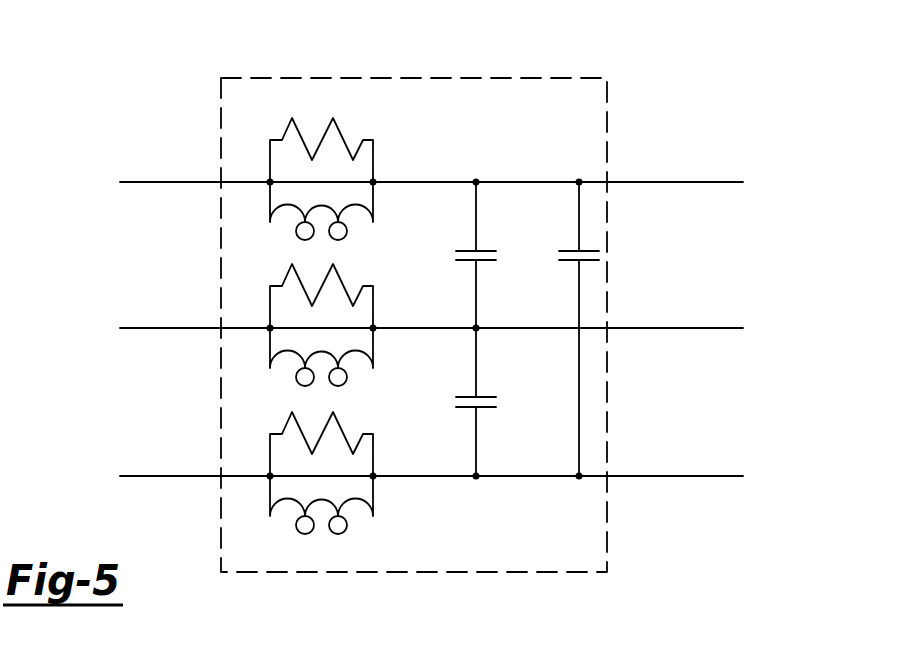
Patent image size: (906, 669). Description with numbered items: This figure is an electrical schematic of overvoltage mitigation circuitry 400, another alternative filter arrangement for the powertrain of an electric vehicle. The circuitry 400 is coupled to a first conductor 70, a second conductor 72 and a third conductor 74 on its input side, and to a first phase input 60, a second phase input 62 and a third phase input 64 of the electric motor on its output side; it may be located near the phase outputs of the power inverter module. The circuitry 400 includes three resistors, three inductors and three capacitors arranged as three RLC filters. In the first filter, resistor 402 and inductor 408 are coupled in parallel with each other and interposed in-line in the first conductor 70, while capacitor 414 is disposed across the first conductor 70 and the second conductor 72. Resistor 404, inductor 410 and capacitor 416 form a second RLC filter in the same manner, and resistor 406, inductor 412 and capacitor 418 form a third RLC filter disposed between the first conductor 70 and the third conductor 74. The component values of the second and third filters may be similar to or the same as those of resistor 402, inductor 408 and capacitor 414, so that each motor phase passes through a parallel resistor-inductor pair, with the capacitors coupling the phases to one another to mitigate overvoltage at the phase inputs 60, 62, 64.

The circuitry 400 is at (501, 72).
The resistor 402 is at (352, 134).
The resistor 404 is at (283, 276).
The resistor 406 is at (283, 422).
The inductor 408 is at (290, 225).
The inductor 410 is at (290, 371).
The inductor 412 is at (290, 518).
The capacitor 414 is at (464, 250).
The capacitor 416 is at (464, 396).
The capacitor 418 is at (569, 250).
The first phase input 60 is at (721, 175).
The second phase input 62 is at (721, 321).
The third phase input 64 is at (721, 469).
The first conductor 70 is at (136, 175).
The second conductor 72 is at (136, 321).
The third conductor 74 is at (136, 469).